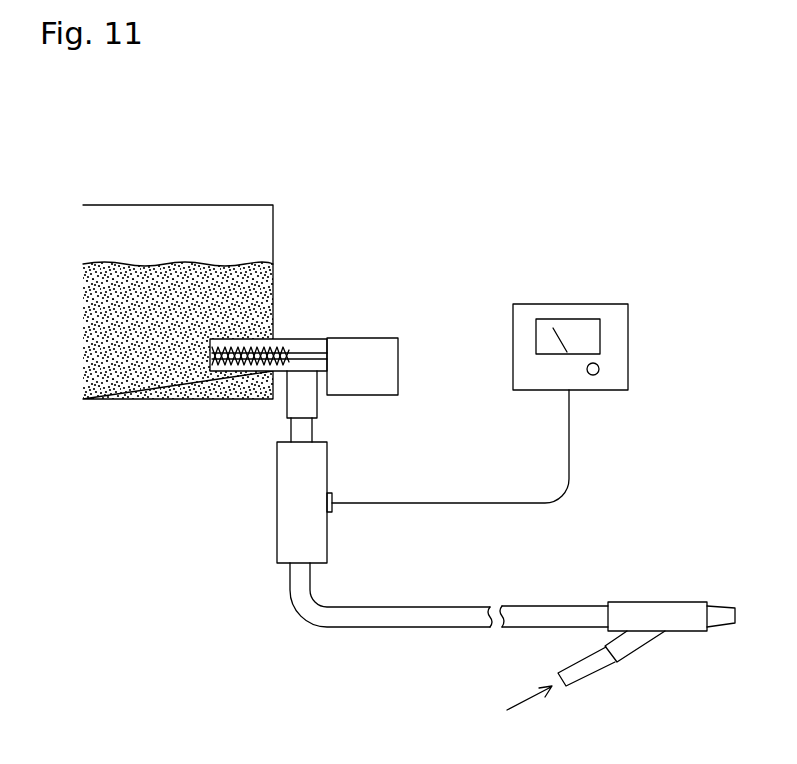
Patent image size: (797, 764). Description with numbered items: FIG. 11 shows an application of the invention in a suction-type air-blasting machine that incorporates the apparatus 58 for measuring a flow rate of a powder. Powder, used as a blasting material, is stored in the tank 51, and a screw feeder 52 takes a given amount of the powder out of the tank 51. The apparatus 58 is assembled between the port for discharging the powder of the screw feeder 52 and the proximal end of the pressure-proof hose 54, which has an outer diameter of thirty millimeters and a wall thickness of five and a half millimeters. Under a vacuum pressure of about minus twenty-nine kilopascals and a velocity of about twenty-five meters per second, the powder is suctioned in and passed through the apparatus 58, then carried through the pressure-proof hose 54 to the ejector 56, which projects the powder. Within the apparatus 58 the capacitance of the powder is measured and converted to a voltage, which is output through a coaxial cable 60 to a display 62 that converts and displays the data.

The tank 51 is at (273, 233).
The screw feeder 52 is at (308, 339).
The pressure-proof hose 54 is at (338, 617).
The ejector 56 is at (648, 610).
The apparatus for measuring a flow rate of a powder 58 is at (288, 511).
The coaxial cable 60 is at (560, 487).
The gauge / indicator 62 is at (628, 345).